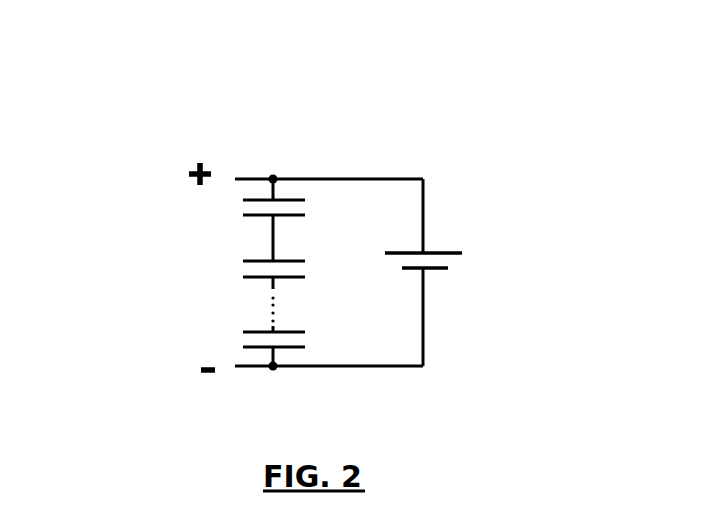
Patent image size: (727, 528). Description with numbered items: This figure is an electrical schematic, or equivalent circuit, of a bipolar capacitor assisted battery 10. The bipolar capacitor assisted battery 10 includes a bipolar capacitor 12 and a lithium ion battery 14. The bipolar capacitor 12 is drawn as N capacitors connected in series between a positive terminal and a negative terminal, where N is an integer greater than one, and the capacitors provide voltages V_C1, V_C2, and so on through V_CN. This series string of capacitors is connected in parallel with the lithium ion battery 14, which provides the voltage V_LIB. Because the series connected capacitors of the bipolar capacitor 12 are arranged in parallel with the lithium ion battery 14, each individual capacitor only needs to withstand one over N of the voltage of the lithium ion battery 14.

The bipolar capacitor assisted battery 10 is at (345, 202).
The bipolar capacitor 12 is at (146, 269).
The lithium ion battery 14 is at (525, 230).